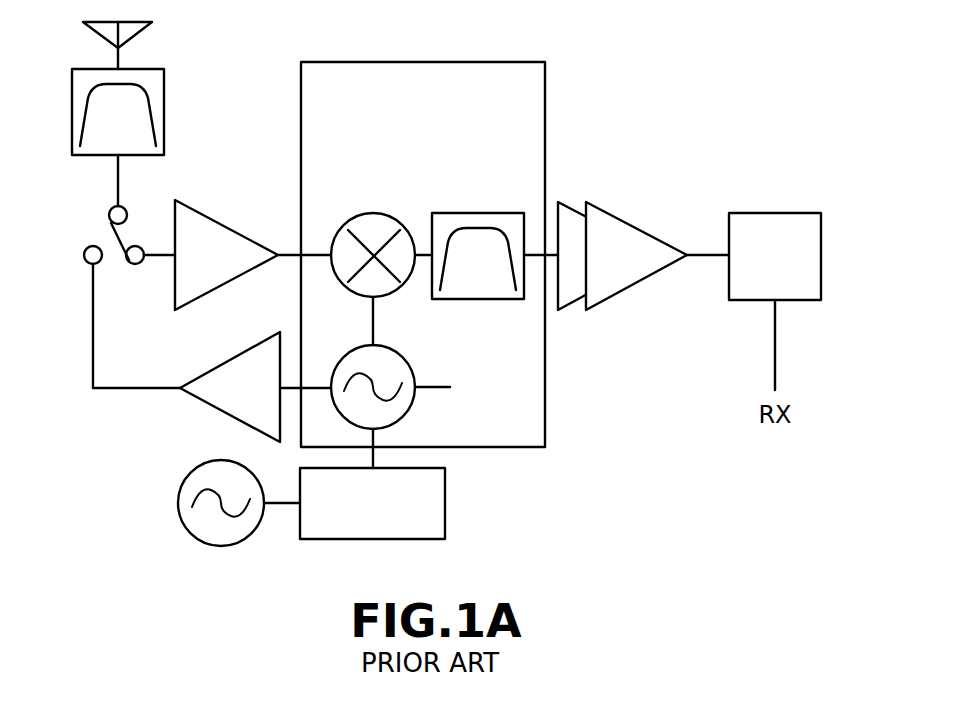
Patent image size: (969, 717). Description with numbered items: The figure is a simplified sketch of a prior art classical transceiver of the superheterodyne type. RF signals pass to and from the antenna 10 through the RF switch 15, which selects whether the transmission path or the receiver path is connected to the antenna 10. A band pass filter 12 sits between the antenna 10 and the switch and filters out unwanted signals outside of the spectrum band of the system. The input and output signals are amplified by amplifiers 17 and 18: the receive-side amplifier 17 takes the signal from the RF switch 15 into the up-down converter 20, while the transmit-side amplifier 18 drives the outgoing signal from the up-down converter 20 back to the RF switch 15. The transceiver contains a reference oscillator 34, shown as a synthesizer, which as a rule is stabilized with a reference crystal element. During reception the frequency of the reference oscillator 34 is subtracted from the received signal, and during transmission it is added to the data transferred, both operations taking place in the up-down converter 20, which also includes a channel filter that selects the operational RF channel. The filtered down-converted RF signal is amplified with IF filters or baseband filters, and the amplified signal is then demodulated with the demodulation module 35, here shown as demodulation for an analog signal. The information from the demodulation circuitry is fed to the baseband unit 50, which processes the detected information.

The antenna 10 is at (142, 32).
The band pass filter 12 is at (164, 92).
The RF switch 15 is at (100, 232).
The amplifier 17 is at (217, 223).
The amplifier 18 is at (205, 398).
The up-down converter 20 is at (452, 62).
The reference oscillator 34 is at (445, 493).
The demodulation module 35 is at (800, 213).
The baseband unit 50 is at (660, 410).